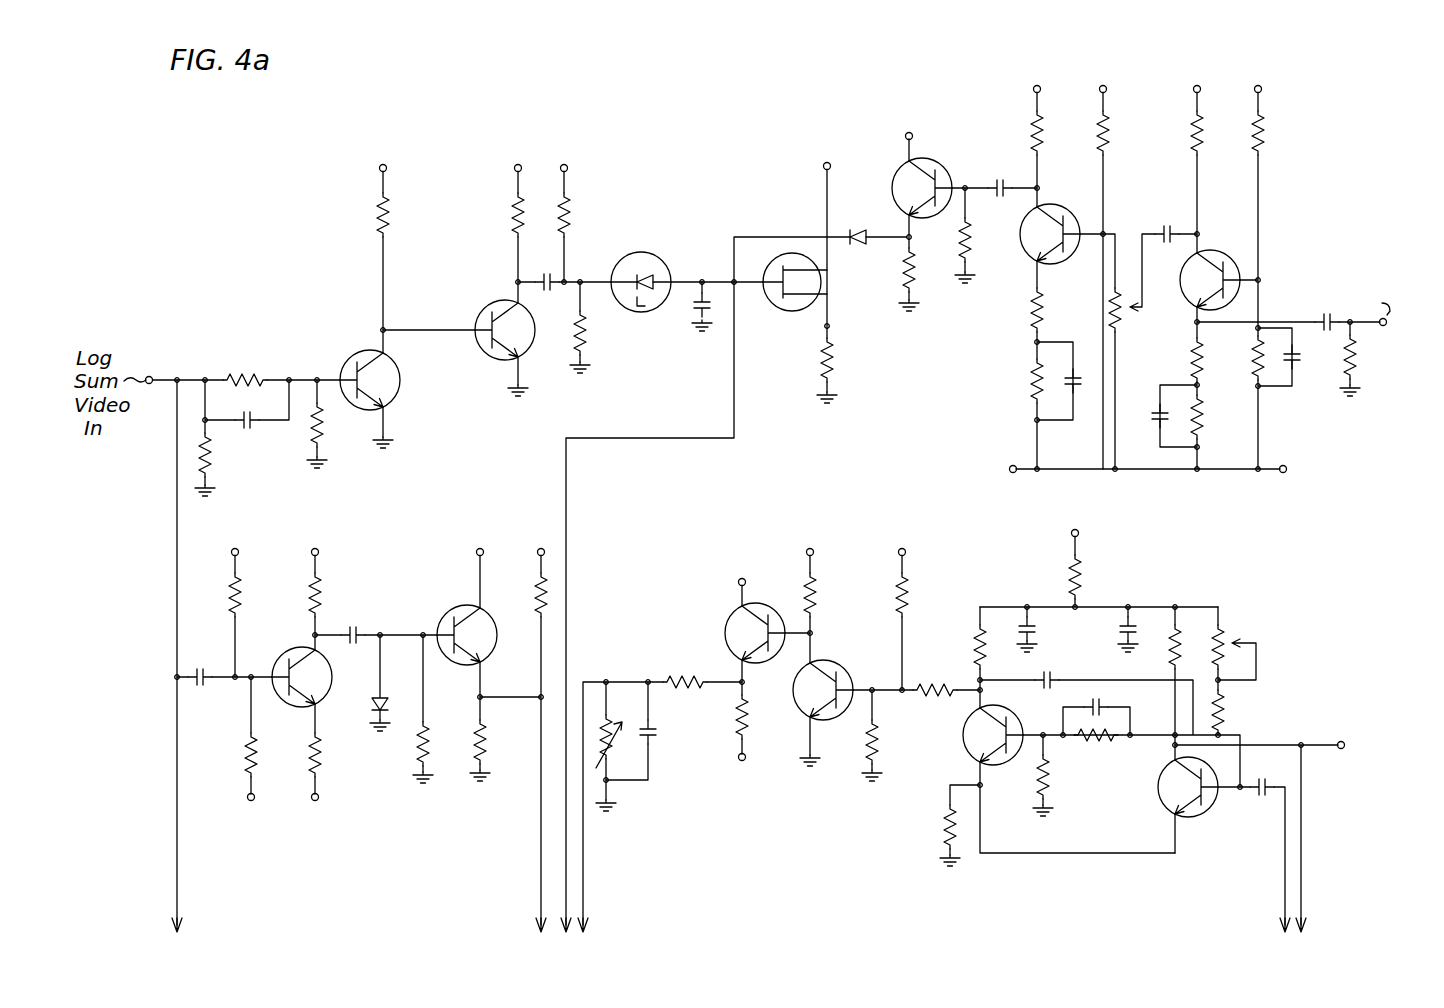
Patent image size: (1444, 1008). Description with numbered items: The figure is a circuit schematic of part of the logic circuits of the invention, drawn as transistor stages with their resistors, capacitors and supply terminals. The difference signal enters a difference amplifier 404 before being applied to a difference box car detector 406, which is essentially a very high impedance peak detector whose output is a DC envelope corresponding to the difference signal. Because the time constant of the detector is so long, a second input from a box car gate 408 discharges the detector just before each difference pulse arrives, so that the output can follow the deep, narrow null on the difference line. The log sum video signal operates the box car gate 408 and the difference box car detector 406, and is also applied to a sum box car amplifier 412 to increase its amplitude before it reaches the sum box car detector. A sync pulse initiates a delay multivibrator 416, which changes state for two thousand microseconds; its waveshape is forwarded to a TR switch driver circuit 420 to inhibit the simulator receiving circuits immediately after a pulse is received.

The difference amplifier 404 is at (1266, 38).
The difference box car detector 406 is at (875, 142).
The box car gate 408 is at (559, 115).
The sum box car amplifier 412 is at (397, 526).
The delay multivibrator 416 is at (1260, 510).
The TR switch driver circuit 420 is at (933, 510).